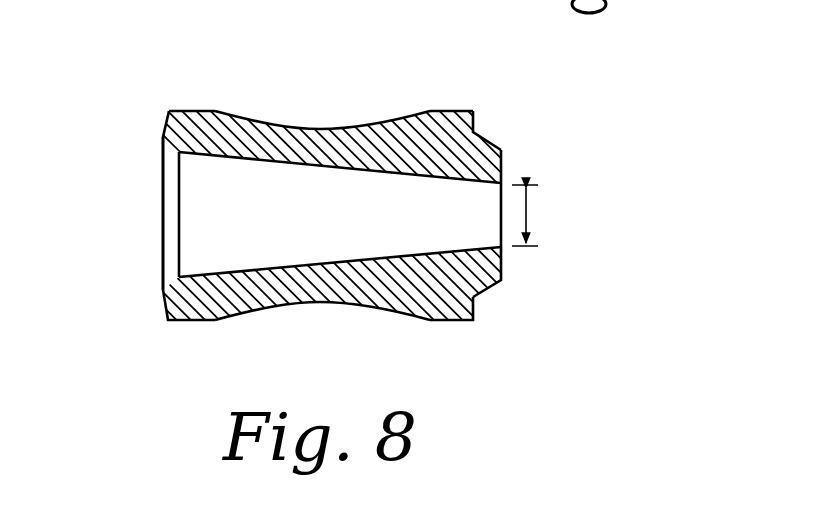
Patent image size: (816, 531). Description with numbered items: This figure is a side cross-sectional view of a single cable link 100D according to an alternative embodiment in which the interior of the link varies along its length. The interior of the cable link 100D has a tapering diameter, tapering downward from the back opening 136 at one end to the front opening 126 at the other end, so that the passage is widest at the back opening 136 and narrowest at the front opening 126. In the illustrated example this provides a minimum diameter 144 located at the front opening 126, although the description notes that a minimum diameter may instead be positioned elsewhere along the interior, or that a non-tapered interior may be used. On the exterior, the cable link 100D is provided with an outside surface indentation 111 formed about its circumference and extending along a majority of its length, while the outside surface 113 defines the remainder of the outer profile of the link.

The cable link 100D is at (372, 182).
The outside surface indentation 111 is at (313, 125).
The outside surface 113 is at (450, 110).
The front opening 126 is at (586, 236).
The back opening 136 is at (151, 212).
The minimum diameter 144 is at (527, 213).